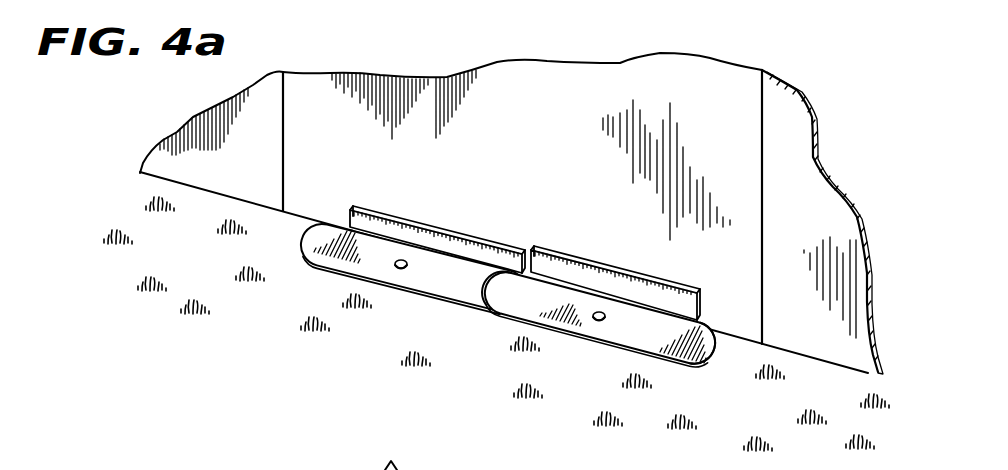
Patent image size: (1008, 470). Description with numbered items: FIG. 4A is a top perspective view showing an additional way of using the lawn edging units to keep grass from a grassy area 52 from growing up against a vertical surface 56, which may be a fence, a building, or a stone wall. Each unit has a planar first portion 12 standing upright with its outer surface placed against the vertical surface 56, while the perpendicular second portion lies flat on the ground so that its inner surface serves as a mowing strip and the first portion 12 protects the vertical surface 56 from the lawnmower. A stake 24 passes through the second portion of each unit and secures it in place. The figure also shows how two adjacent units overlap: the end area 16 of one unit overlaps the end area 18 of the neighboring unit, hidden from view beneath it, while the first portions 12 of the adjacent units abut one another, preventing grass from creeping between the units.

The first portion 12 is at (420, 232).
The end area 16 is at (303, 247).
The end area 18 is at (496, 274).
The stake 24 is at (404, 269).
The grassy area 52 is at (199, 258).
The vertical surface 56 is at (803, 175).